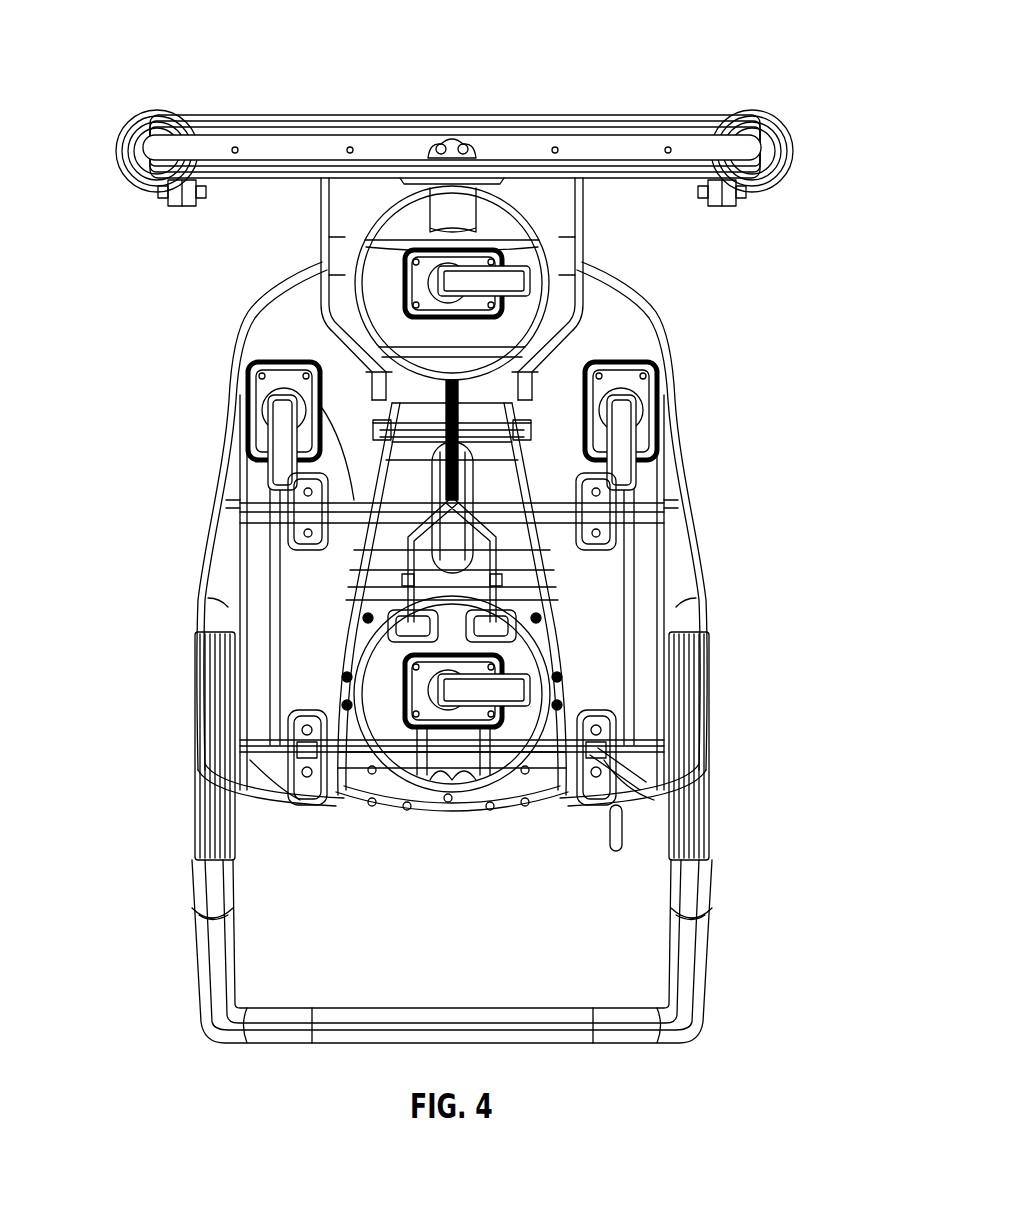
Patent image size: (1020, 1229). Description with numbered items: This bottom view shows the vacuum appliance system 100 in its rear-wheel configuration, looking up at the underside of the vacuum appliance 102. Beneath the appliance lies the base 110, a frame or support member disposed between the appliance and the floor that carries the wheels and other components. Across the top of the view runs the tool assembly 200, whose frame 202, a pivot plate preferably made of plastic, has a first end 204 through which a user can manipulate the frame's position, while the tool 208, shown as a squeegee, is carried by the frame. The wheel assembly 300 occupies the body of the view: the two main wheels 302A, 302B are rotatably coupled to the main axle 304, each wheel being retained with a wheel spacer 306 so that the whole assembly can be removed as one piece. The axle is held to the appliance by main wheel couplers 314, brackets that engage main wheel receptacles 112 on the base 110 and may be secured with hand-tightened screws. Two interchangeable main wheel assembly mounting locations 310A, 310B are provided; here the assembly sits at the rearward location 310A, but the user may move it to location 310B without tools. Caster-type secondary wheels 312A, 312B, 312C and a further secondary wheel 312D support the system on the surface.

The vacuum appliance system 100 is at (735, 42).
The vacuum appliance 102 is at (220, 540).
The base 110 is at (645, 343).
The main wheel receptacle 112 is at (675, 768).
The tool assembly 200 is at (180, 102).
The frame 202 is at (340, 208).
The first end 204 is at (447, 808).
The tool 208 is at (300, 150).
The wheel assembly 300 is at (181, 720).
The main wheel 302A is at (700, 818).
The main wheel 302B is at (205, 785).
The main axle 304 is at (282, 795).
The wheel spacer 306 is at (250, 748).
The main wheel assembly mounting location 310A is at (458, 752).
The main wheel assembly mounting location 310B is at (246, 327).
The secondary wheel 312A is at (518, 280).
The secondary wheel 312B is at (250, 403).
The secondary wheel 312C is at (660, 403).
The motor mount 312D is at (530, 690).
The main wheel coupler 314 is at (262, 620).